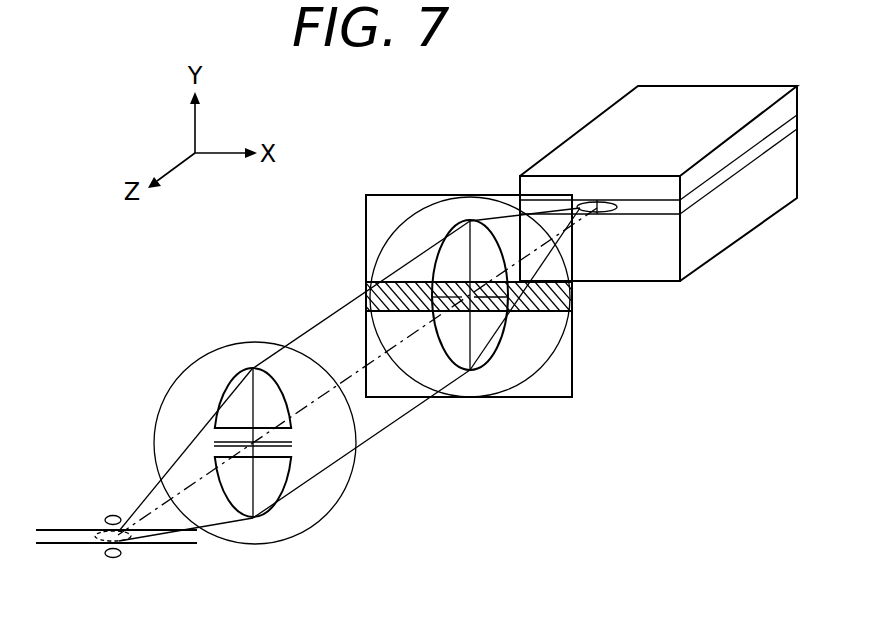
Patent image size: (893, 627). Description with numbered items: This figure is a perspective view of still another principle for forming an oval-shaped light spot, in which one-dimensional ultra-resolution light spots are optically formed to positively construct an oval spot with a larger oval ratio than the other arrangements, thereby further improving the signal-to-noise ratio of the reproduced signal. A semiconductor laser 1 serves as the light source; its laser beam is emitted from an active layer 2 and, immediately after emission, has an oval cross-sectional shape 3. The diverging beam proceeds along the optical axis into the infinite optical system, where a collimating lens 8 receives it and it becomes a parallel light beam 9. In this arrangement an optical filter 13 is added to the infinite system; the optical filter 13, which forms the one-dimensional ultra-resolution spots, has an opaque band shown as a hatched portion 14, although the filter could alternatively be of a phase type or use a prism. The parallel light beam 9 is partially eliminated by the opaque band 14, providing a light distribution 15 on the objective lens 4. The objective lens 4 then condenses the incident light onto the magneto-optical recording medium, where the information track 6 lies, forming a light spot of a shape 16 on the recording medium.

The semiconductor laser 1 is at (590, 138).
The active layer 2 is at (652, 208).
The cross-sectional shape of the laser beam 3 is at (616, 213).
The objective lens 4 is at (237, 343).
The information track 6 is at (70, 532).
The collimating lens 8 is at (551, 358).
The parallel light beam 9 is at (482, 337).
The optical filter 13 is at (425, 195).
The opaque band 14 is at (573, 302).
The distribution on the objective lens 15 is at (283, 409).
The shape of the light spot 16 is at (100, 542).